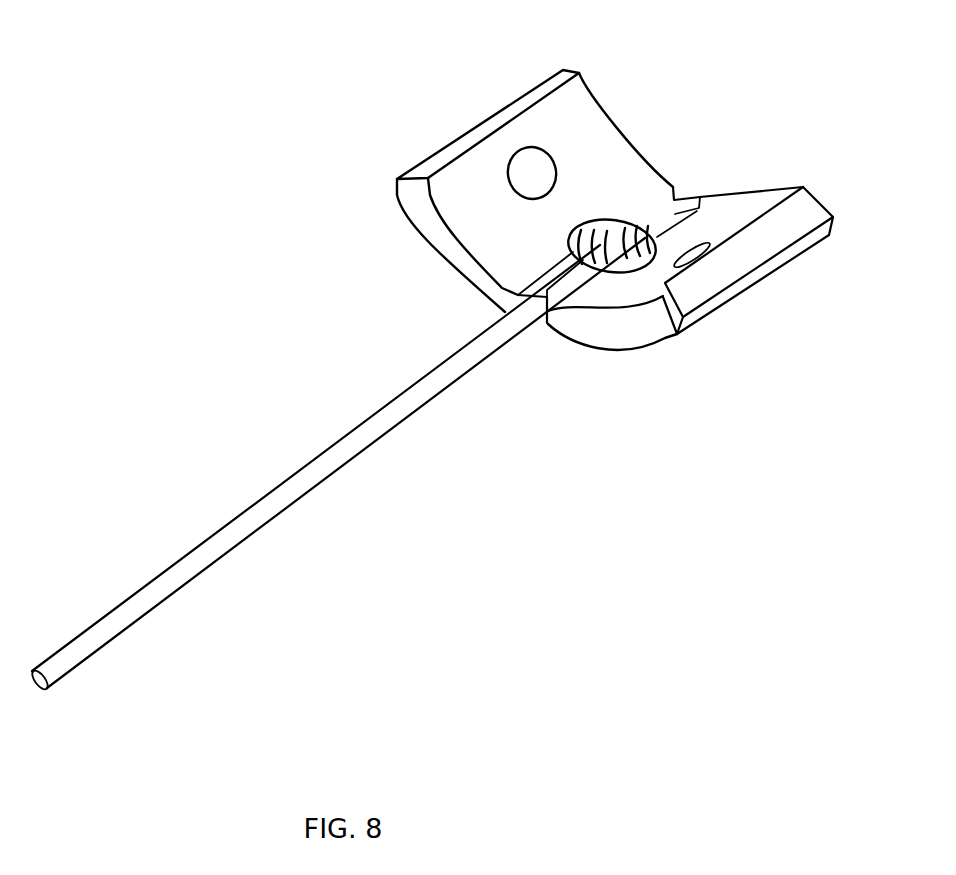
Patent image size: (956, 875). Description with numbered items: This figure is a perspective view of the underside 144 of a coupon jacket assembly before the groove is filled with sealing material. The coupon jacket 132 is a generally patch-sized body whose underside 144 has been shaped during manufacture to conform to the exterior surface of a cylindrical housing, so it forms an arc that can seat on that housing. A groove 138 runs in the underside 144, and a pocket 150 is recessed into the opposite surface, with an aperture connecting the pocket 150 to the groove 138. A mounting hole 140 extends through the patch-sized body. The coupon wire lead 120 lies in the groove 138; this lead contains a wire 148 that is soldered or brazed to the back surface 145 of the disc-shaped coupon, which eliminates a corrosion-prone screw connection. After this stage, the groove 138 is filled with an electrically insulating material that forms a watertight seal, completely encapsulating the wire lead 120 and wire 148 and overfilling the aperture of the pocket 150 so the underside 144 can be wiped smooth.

The coupon wire lead 120 is at (302, 483).
The coupon jacket 132 is at (424, 218).
The groove 138 is at (546, 325).
The mounting hole 140 is at (528, 170).
The underside 144 is at (562, 134).
The back surface 145 is at (670, 183).
The wire 148 is at (612, 237).
The pocket 150 is at (577, 230).